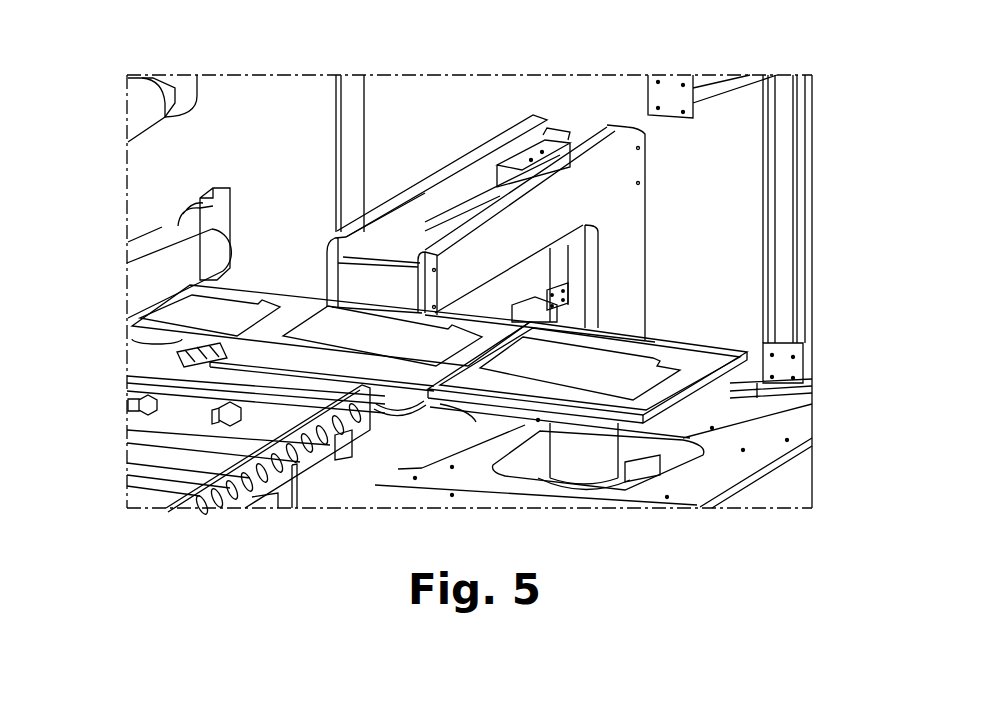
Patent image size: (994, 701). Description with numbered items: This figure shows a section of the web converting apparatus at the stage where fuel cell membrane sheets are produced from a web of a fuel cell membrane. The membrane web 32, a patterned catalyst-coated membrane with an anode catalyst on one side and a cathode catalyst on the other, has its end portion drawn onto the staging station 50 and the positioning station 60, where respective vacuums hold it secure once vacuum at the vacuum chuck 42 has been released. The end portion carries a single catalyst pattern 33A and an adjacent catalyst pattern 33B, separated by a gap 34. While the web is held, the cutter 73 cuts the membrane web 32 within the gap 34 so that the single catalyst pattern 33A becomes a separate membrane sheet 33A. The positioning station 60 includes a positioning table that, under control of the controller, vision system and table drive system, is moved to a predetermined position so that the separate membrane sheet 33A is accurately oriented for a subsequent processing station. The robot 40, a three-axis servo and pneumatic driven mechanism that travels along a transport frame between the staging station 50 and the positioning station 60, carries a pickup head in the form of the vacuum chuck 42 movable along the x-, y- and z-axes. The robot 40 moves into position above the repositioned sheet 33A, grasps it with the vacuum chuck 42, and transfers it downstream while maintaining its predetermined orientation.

The membrane web 32 is at (228, 297).
The membrane sheet 33A is at (637, 380).
The adjacent catalyst pattern 33B is at (328, 328).
The gap 34 is at (293, 300).
The robot 40 is at (245, 508).
The vacuum chuck 42 is at (356, 458).
The staging station 50 is at (392, 387).
The positioning station 60 is at (657, 392).
The cutter 73 is at (556, 263).